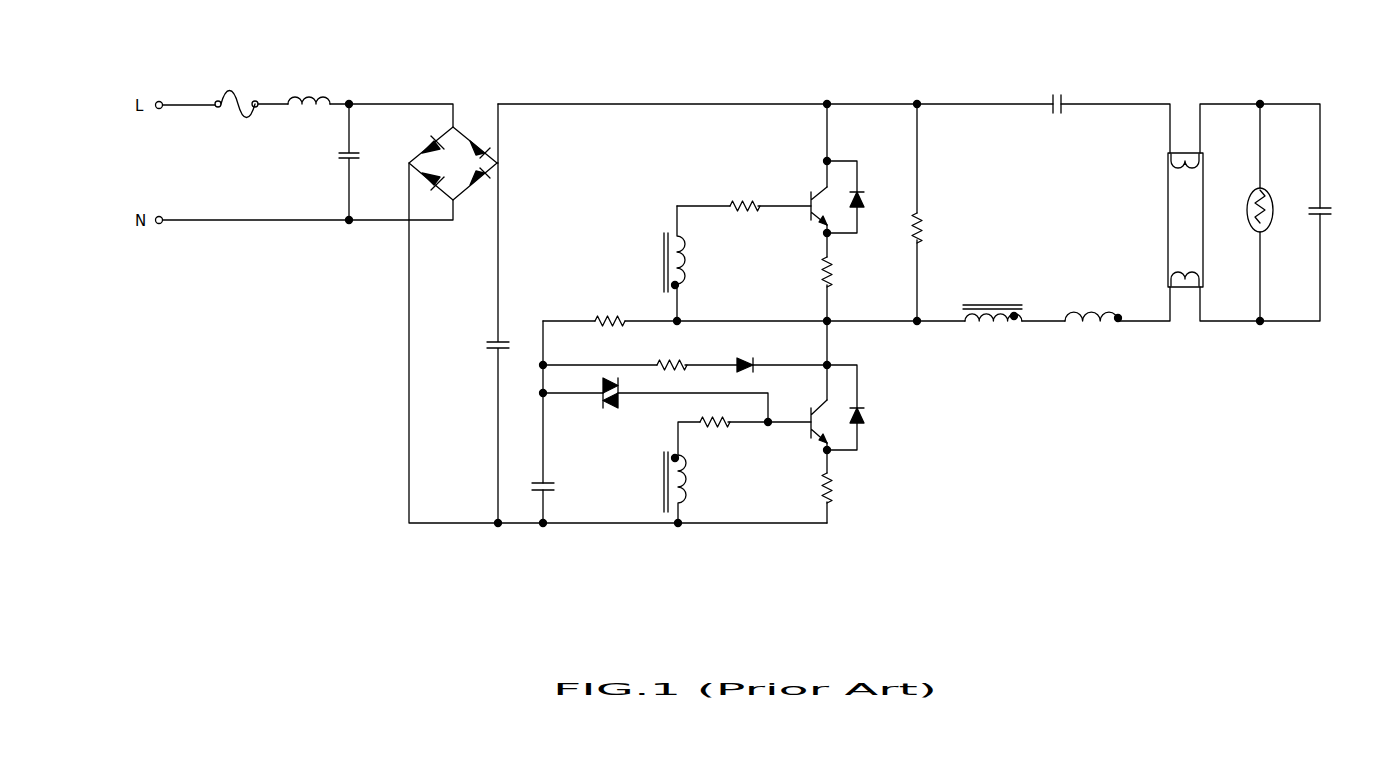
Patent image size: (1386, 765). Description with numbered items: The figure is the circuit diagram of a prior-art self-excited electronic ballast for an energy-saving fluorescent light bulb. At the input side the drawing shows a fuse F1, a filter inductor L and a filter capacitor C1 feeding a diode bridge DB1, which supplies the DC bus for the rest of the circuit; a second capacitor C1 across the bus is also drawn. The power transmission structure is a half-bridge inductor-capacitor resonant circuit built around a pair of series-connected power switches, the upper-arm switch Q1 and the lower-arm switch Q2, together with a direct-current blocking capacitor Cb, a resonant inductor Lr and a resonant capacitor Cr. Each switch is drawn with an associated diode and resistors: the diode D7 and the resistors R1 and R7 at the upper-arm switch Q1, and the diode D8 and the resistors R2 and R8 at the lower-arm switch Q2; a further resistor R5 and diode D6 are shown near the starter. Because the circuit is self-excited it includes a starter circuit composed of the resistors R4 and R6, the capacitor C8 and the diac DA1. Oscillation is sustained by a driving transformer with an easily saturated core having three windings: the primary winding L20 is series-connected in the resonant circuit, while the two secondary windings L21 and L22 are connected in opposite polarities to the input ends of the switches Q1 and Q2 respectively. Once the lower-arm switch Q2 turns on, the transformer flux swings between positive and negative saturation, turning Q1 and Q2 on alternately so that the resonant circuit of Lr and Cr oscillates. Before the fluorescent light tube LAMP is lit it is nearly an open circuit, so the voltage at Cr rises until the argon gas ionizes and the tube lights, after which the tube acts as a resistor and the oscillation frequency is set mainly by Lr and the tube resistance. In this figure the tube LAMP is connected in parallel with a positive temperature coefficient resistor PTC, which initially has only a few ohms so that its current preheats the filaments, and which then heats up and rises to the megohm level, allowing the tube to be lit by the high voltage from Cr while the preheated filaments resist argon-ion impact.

The fuse F1 is at (236, 96).
The filter inductor L is at (309, 89).
The capacitor C1 is at (426, 313).
The diode bridge rectifier DB1 is at (453, 143).
The direct-current blocking capacitor Cb is at (1057, 94).
The resistor R6 is at (610, 309).
The primary winding L20 is at (992, 303).
The resonant inductor Lr is at (1093, 307).
The upper-arm switch Q1 is at (812, 197).
The diode D7 is at (859, 197).
The resistor R7 is at (840, 272).
The resistor R1 is at (744, 193).
The secondary winding L21 is at (659, 263).
The resistor R4 is at (931, 212).
The resistor R5 is at (672, 356).
The diode D6 is at (740, 357).
The diac DA1 is at (655, 410).
The resistor R2 is at (744, 436).
The lower-arm switch Q2 is at (812, 413).
The diode D8 is at (859, 407).
The resistor R8 is at (815, 488).
The secondary winding L22 is at (659, 487).
The capacitor C8 is at (552, 477).
The fluorescent light tube LAMP is at (1158, 220).
The resistor having a positive temperature coefficient PTC is at (1272, 212).
The resonant capacitor Cr is at (1331, 214).